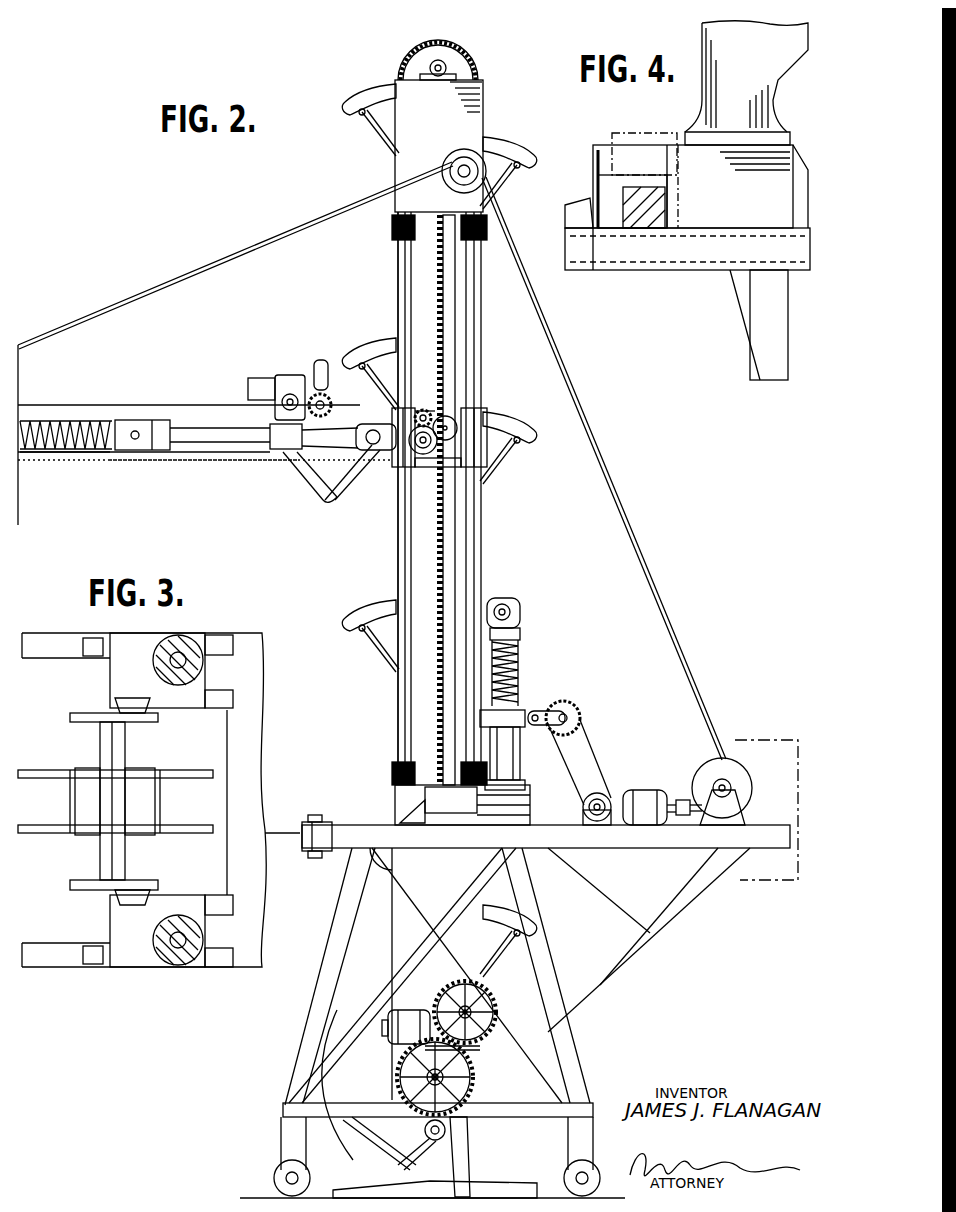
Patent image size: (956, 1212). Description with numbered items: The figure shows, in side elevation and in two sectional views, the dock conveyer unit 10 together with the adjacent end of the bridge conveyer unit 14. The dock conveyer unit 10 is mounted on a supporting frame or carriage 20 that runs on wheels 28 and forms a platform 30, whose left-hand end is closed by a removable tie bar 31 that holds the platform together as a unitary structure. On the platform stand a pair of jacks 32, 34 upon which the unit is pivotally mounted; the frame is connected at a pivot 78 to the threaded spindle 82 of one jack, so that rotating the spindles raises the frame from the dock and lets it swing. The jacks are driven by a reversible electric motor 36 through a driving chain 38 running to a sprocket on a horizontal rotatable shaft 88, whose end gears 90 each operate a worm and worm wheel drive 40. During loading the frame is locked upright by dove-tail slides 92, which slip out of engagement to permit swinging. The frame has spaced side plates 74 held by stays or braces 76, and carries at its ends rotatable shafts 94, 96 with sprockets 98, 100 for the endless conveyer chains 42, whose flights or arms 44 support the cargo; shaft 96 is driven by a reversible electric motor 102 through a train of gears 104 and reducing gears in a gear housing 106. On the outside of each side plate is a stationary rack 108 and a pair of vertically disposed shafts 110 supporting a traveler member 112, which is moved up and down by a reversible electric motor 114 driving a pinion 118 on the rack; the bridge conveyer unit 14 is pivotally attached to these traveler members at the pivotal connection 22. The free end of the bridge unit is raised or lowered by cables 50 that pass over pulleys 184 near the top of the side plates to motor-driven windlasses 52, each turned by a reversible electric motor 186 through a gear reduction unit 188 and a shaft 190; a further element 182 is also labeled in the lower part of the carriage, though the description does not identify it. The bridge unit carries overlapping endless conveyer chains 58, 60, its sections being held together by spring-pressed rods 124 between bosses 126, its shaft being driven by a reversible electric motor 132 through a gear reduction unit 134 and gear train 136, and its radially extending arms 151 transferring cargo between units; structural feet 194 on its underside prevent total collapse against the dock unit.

In FIG. 2, the dock conveyer unit 10 is at (489, 540).
In FIG. 2, the bridge conveyer unit 14 is at (152, 472).
In FIG. 2, the supporting frame or carriage 20 is at (548, 940).
In FIG. 2, the pivotal connection 22 is at (372, 450).
In FIG. 2, the wheels 28 is at (276, 1176).
In FIG. 2, the platform 30 is at (636, 848).
In FIG. 3, the platform 30 is at (252, 774).
In FIG. 4, the platform 30 is at (685, 256).
In FIG. 2, the tie bar 31 is at (304, 832).
In FIG. 3, the tie bar 31 is at (282, 833).
In FIG. 2, the jack 32 is at (472, 746).
In FIG. 3, the jack 32 is at (166, 962).
In FIG. 3, the jack 34 is at (186, 640).
In FIG. 4, the jack 34 is at (723, 112).
In FIG. 2, the reversible electric motor 36 is at (600, 796).
In FIG. 2, the driving chain 38 is at (590, 758).
In FIG. 2, the worm and worm wheel drive 40 is at (528, 712).
In FIG. 2, the endless conveyer chains 42 is at (400, 58).
In FIG. 3, the endless conveyer chains 42 is at (80, 822).
In FIG. 2, the flights or arms 44 is at (370, 108).
In FIG. 3, the flights or arms 44 is at (42, 778).
In FIG. 2, the cables 50 is at (206, 268).
In FIG. 2, the motor-driven windlasses 52 is at (706, 772).
In FIG. 2, the endless conveyer chains 58 is at (218, 462).
In FIG. 2, the endless conveyer chains 60 is at (76, 456).
In FIG. 2, the side plates 74 is at (396, 158).
In FIG. 3, the side plates 74 is at (84, 722).
In FIG. 3, the stays or braces 76 is at (108, 765).
In FIG. 2, the pivot 78 is at (520, 612).
In FIG. 2, the threaded spindle 82 is at (520, 658).
In FIG. 2, the rotatable shaft 88 is at (568, 720).
In FIG. 2, the gears 90 is at (566, 708).
In FIG. 3, the dove-tail slides 92 is at (122, 703).
In FIG. 4, the dove-tail slides 92 is at (650, 195).
In FIG. 2, the rotatable shaft 94 is at (438, 62).
In FIG. 2, the rotatable shaft 96 is at (470, 1082).
In FIG. 2, the sprockets 98 is at (470, 82).
In FIG. 3, the sprockets 100 is at (137, 822).
In FIG. 2, the reversible electric motor 102 is at (404, 1020).
In FIG. 2, the train of gears 104 is at (480, 1060).
In FIG. 2, the gear housing 106 is at (486, 1010).
In FIG. 2, the stationary rack 108 is at (440, 222).
In FIG. 2, the vertically disposed shafts 110 is at (400, 545).
In FIG. 2, the traveler member 112 is at (455, 455).
In FIG. 2, the reversible electric motor 114 is at (423, 455).
In FIG. 2, the pinion 118 is at (423, 410).
In FIG. 2, the spring-pressed rods 124 is at (80, 420).
In FIG. 2, the bosses 126 is at (145, 420).
In FIG. 2, the reversible electric motor 132 is at (262, 378).
In FIG. 2, the gear reduction unit 134 is at (290, 375).
In FIG. 2, the gear train 136 is at (325, 395).
In FIG. 2, the radially extending arms 151 is at (320, 360).
In FIG. 2, the drum 182 is at (343, 1133).
In FIG. 2, the pulleys 184 is at (455, 160).
In FIG. 2, the reversible electric motor 186 is at (642, 794).
In FIG. 2, the gear reduction unit 188 is at (745, 808).
In FIG. 2, the shaft 190 is at (728, 784).
In FIG. 2, the structural feet 194 is at (300, 482).